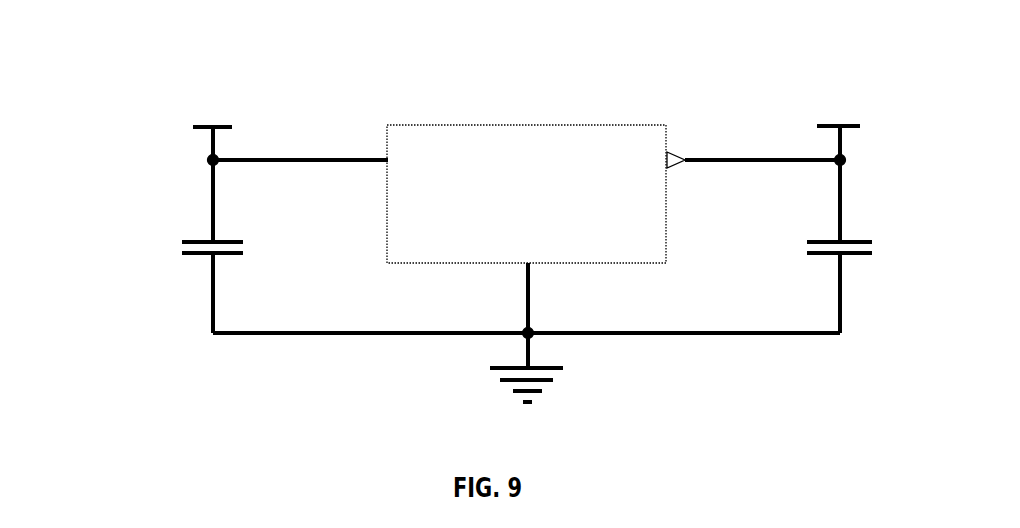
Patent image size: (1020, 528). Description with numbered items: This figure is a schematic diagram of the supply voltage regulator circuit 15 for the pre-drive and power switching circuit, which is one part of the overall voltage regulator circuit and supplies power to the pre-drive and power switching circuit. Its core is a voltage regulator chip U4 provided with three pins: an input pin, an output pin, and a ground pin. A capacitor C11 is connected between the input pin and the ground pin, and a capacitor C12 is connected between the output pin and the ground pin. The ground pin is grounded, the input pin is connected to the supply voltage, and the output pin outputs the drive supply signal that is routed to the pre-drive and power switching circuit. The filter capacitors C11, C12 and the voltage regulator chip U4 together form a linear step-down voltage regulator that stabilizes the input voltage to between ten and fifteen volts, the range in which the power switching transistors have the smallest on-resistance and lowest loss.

The supply voltage regulator circuit for the pre-drive and power switching circuit 15 is at (177, 182).
The voltage regulator chip U4 is at (526, 179).
The capacitor C11 is at (238, 246).
The capacitor C12 is at (867, 246).